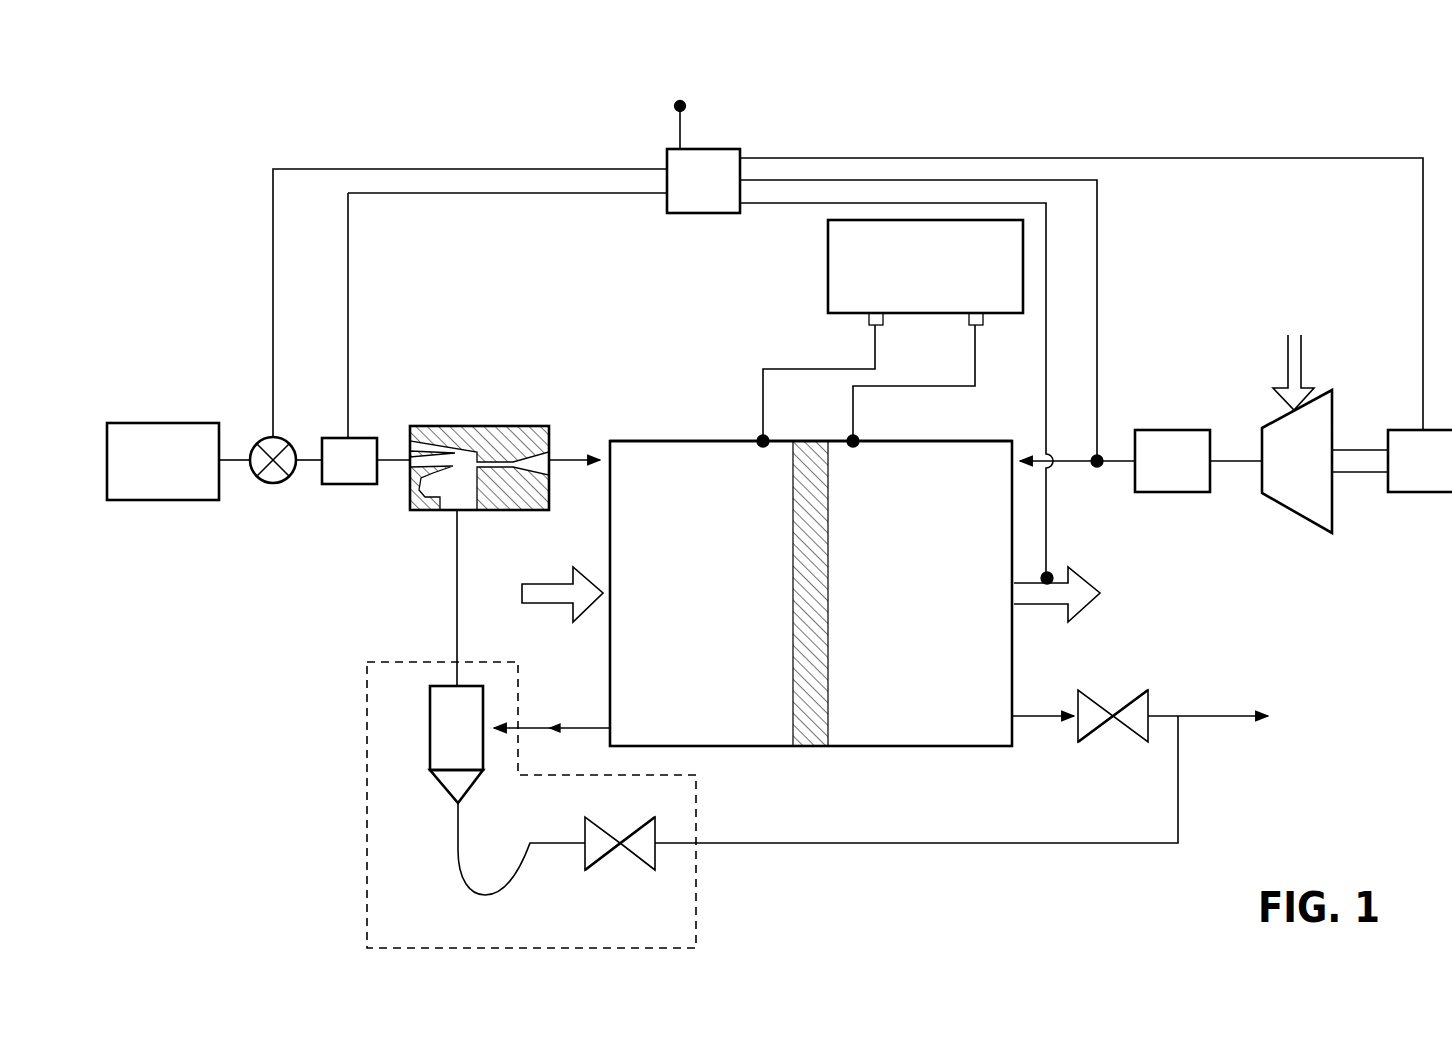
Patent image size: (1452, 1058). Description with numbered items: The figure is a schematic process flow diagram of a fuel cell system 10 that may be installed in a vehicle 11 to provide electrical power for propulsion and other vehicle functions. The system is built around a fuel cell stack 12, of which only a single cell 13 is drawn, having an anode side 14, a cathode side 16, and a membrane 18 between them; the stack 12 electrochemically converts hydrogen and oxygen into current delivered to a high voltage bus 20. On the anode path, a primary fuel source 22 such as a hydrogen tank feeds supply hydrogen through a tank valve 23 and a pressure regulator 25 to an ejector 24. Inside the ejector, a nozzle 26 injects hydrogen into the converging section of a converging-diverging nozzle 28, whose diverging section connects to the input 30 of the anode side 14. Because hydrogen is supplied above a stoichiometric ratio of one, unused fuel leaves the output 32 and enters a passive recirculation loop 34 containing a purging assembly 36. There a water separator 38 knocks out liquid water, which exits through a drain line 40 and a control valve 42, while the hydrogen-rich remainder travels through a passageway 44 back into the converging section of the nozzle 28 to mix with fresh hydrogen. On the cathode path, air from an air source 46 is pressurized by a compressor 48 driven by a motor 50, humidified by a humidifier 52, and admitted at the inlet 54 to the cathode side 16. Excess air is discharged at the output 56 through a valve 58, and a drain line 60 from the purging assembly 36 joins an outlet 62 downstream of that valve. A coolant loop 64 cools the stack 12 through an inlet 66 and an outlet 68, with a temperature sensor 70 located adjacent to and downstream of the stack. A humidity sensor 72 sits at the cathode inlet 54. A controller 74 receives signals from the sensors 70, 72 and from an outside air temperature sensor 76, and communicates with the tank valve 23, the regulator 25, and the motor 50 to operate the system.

The fuel cell system 10 is at (510, 92).
The vehicle 11 is at (1025, 94).
The fuel cell stack 12 is at (655, 437).
The cell 13 is at (735, 440).
The anode side 14 is at (701, 593).
The cathode side 16 is at (920, 593).
The membrane 18 is at (810, 746).
The high voltage bus 20 is at (890, 333).
The primary fuel source 22 is at (160, 422).
The tank valve 23 is at (258, 446).
The ejector 24 is at (460, 422).
The pressure regulator 25 is at (366, 338).
The nozzle 26 is at (440, 444).
The converging-diverging nozzle 28 is at (470, 455).
The input 30 is at (605, 468).
The output 32 is at (596, 742).
The recirculation loop 34 is at (322, 598).
The purging assembly 36 is at (366, 787).
The water separator 38 is at (456, 744).
The drain line 40 is at (455, 826).
The control valve 42 is at (620, 850).
The passageway 44 is at (455, 610).
The air source 46 is at (1300, 378).
The compressor 48 is at (1271, 461).
The motor 50 is at (1392, 461).
The humidifier 52 is at (1172, 461).
The inlet 54 is at (1124, 461).
The output 56 is at (1042, 720).
The valve 58 is at (1113, 725).
The drain line 60 is at (740, 843).
The outlet 62 is at (1210, 716).
The coolant loop 64 is at (1085, 610).
The inlet 66 is at (520, 593).
The outlet 68 is at (1088, 575).
The temperature sensor 70 is at (1049, 574).
The humidity sensor 72 is at (1098, 458).
The controller 74 is at (848, 363).
The outside air temperature sensor 76 is at (678, 128).